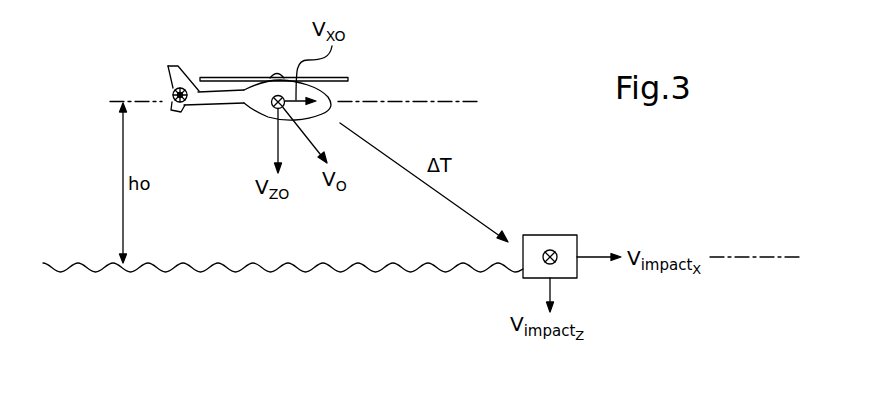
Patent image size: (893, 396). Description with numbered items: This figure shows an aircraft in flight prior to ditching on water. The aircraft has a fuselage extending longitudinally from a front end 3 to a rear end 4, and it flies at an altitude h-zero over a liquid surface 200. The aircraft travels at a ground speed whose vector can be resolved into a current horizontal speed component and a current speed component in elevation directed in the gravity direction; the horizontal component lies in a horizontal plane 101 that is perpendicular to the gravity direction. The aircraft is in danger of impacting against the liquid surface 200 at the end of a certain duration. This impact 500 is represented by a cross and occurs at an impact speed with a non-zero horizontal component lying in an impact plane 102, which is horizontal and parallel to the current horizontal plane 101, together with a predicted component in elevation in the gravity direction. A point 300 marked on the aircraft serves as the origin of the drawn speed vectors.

The front end 3 is at (333, 110).
The rear end 4 is at (170, 89).
The horizontal plane 101 is at (451, 100).
The impact plane 102 is at (752, 256).
The liquid surface 200 is at (70, 268).
The reference point / center of gravity 300 is at (272, 104).
The impact 500 is at (566, 234).